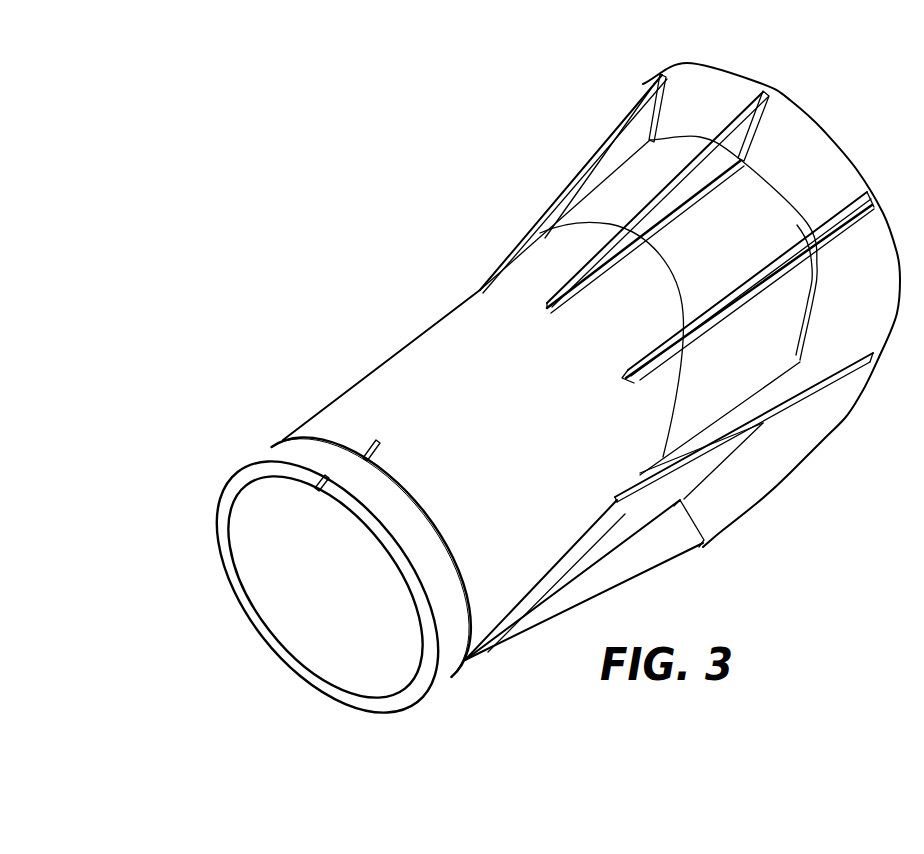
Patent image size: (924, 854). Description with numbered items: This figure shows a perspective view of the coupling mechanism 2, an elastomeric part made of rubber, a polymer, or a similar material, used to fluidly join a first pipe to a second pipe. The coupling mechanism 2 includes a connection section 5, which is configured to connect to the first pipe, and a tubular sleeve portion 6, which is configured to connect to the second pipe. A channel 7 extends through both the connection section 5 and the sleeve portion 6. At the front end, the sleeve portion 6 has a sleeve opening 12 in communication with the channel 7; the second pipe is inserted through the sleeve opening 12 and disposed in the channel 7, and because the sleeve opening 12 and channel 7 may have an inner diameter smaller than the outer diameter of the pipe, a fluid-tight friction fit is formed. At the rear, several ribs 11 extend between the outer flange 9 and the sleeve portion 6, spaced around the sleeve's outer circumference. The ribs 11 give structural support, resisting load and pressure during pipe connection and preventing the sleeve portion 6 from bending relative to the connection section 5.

The coupling mechanism 2 is at (100, 163).
The connection section 5 is at (540, 107).
The sleeve portion 6 is at (343, 318).
The channel 7 is at (320, 575).
The outer flange 9 is at (810, 145).
The ribs 11 is at (636, 124).
The sleeve opening 12 is at (383, 700).